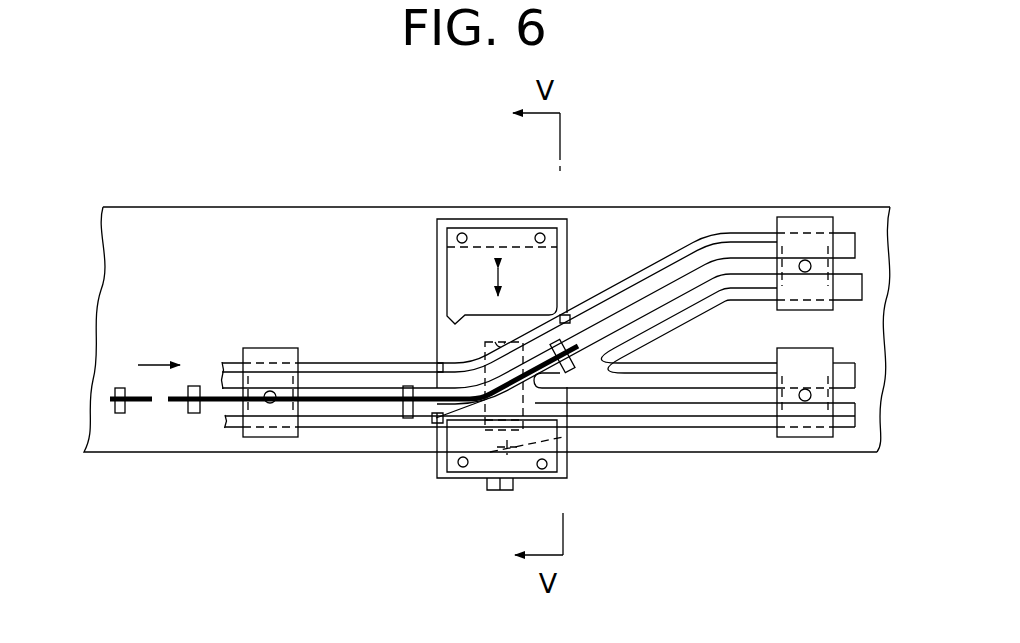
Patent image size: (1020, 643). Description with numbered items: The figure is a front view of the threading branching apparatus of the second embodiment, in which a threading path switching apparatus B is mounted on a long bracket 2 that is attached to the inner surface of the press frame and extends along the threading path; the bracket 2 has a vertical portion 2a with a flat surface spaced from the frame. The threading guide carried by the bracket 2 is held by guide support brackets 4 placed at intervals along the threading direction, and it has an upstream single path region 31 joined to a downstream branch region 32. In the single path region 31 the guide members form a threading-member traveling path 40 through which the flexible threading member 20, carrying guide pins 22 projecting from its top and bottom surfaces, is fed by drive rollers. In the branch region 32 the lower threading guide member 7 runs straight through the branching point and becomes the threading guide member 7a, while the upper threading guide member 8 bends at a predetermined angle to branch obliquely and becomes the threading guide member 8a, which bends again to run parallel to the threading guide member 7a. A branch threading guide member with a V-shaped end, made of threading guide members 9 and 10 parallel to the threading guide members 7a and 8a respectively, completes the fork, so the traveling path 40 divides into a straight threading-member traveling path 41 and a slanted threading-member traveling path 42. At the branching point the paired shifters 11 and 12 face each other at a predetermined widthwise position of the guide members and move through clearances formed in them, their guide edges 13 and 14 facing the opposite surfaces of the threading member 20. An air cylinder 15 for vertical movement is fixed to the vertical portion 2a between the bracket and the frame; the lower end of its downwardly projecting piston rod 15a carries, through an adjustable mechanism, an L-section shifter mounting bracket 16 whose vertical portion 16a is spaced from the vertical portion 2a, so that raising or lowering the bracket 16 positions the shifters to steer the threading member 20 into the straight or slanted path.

The bracket 2 is at (748, 207).
The vertical portion 2a is at (200, 225).
The guide support bracket 4 is at (262, 437).
The lower threading guide member 7 is at (330, 427).
The threading guide member 7a is at (695, 412).
The upper threading guide member 8 is at (365, 378).
The threading guide member 8a is at (665, 280).
The threading guide member 9 is at (658, 380).
The threading guide member 10 is at (682, 300).
The shifter 11 is at (462, 272).
The shifter 12 is at (458, 437).
The guide edge 13 is at (455, 322).
The guide edge 14 is at (436, 418).
The air cylinder 15 is at (478, 352).
The piston rod 15a is at (563, 437).
The shifter mounting bracket 16 is at (470, 480).
The vertical portion 16a is at (508, 219).
The threading member 20 is at (176, 401).
The guide pin 22 is at (121, 406).
The single path region 31 is at (228, 352).
The branch region 32 is at (627, 463).
The threading-member traveling path 40 is at (218, 384).
The straight threading-member traveling path 41 is at (863, 405).
The slanted threading-member traveling path 42 is at (684, 283).
The threading path switching apparatus B is at (458, 507).